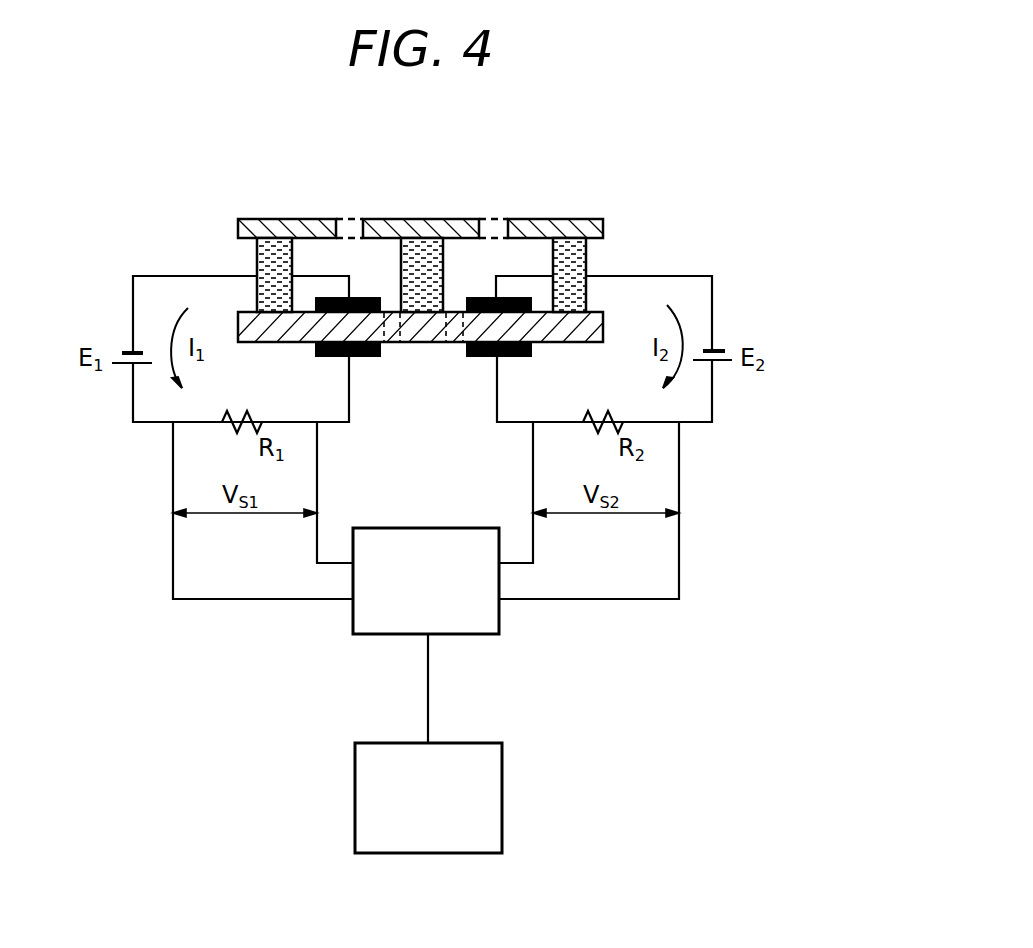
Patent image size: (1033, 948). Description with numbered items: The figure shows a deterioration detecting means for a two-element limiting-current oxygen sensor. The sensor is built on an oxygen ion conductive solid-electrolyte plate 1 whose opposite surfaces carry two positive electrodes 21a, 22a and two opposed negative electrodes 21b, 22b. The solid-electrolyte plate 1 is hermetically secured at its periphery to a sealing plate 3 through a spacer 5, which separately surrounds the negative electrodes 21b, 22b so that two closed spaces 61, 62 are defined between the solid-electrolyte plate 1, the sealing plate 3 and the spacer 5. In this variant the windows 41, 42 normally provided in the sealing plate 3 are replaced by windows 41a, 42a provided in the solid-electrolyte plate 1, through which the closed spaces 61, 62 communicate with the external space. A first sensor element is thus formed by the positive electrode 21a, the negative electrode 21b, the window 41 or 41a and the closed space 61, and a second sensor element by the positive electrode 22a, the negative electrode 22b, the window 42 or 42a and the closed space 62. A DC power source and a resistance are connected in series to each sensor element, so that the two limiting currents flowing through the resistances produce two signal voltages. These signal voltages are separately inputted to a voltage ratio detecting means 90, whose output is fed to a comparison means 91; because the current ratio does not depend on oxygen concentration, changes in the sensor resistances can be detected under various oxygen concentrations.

The solid-electrolyte plate 1 is at (595, 322).
The sealing plate 3 is at (422, 219).
The spacer 5 is at (255, 258).
The window 41 is at (350, 219).
The window 42 is at (497, 219).
The window 41a is at (396, 312).
The window 42a is at (452, 312).
The closed space 61 is at (327, 255).
The closed space 62 is at (513, 258).
The positive electrode 21a is at (327, 357).
The negative electrode 21b is at (393, 357).
The positive electrode 22a is at (477, 357).
The negative electrode 22b is at (535, 303).
The voltage ratio detecting means 90 is at (482, 634).
The comparison means 91 is at (502, 832).